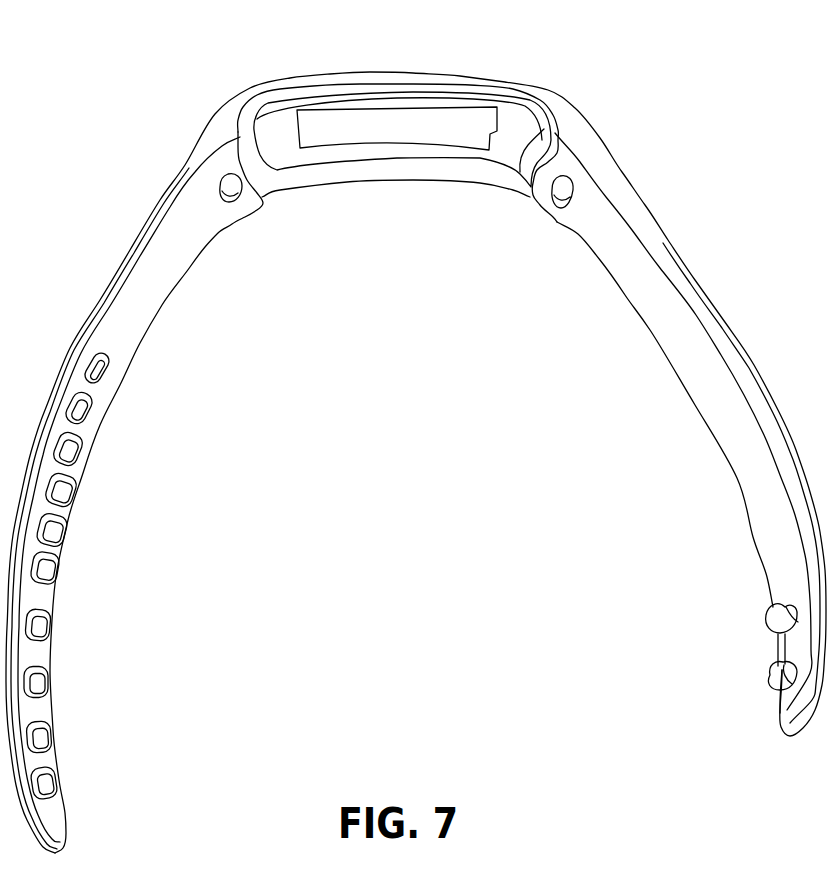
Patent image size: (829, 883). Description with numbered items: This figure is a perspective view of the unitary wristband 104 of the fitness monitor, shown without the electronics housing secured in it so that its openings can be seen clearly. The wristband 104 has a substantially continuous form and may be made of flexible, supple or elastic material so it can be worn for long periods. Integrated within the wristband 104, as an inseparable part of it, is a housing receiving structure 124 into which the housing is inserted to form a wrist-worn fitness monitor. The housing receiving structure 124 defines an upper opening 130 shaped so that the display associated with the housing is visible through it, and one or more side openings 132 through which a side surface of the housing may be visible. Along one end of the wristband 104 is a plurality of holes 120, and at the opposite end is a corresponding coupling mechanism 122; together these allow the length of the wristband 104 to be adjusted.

The housing receiving structure 124 is at (509, 58).
The unitary wristband 104 is at (643, 273).
The side opening 132 is at (545, 125).
The upper opening 130 is at (387, 125).
The holes 120 is at (62, 777).
The coupling mechanism 122 is at (793, 652).